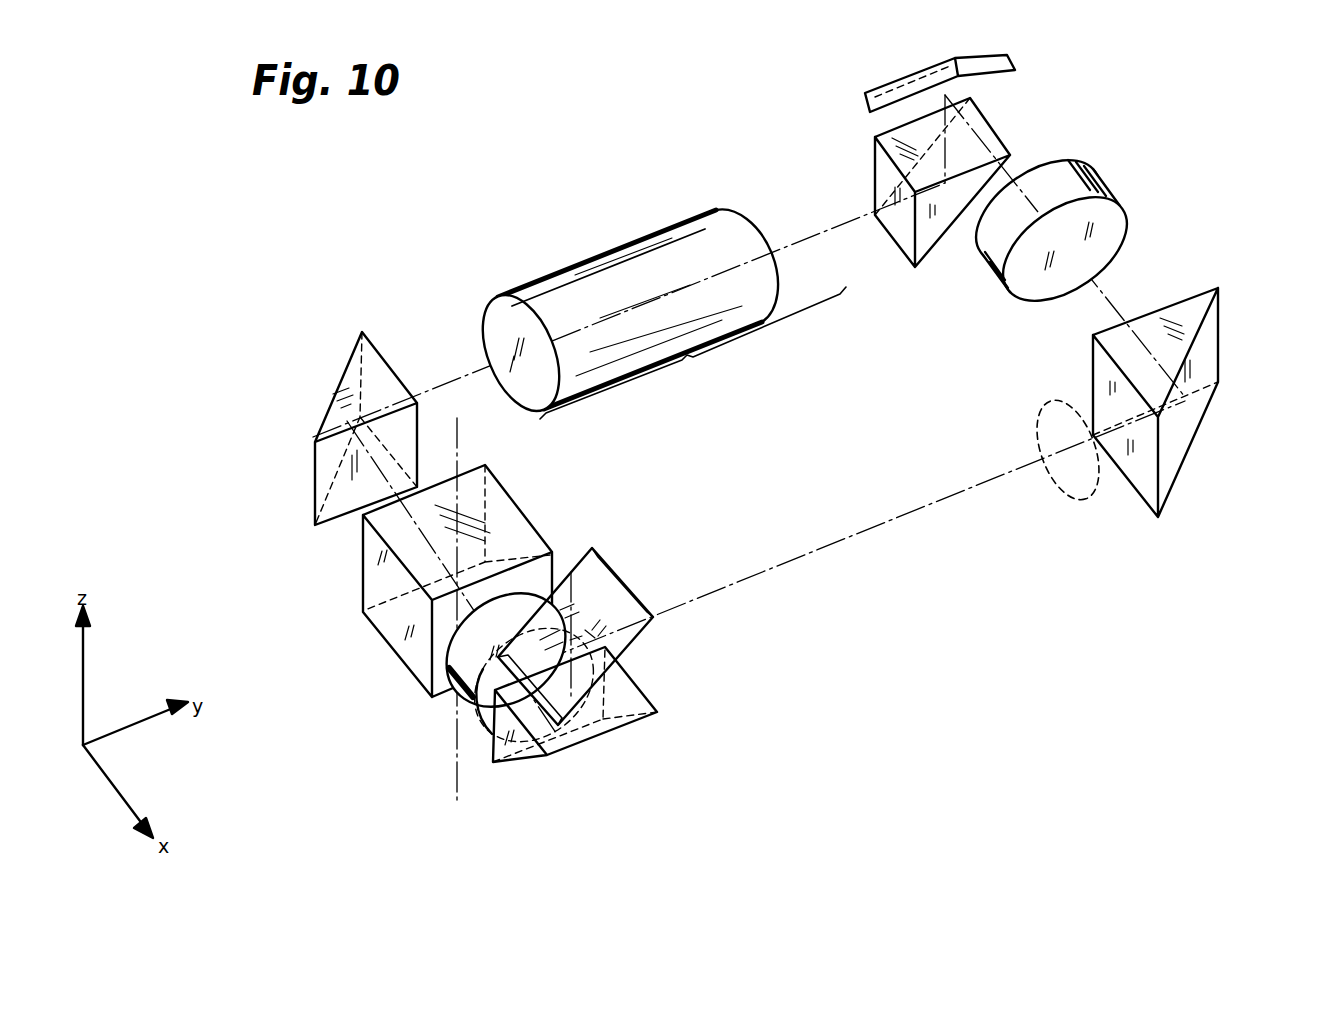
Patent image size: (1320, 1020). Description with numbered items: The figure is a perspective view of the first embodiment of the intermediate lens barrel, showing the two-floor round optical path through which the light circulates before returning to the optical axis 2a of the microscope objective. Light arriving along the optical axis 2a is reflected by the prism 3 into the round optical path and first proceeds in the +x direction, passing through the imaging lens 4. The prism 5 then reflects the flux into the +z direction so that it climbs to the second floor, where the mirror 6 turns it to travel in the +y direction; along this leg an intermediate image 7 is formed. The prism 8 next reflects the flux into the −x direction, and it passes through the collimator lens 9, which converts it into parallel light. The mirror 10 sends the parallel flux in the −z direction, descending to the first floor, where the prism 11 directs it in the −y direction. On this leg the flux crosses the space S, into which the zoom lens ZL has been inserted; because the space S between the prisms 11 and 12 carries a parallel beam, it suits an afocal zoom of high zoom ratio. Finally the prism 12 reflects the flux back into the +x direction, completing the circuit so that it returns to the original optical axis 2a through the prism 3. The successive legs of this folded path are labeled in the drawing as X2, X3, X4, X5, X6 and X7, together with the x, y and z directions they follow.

The optical axis 2a is at (452, 757).
The prism 3 is at (380, 635).
The imaging lens 4 is at (430, 688).
The prism 5 is at (640, 695).
The mirror 6 is at (633, 585).
The intermediate image 7 is at (1095, 500).
The prism 8 is at (1175, 450).
The collimator lens 9 is at (1075, 165).
The mirror 10 is at (870, 108).
The prism 11 is at (873, 175).
The prism 12 is at (343, 392).
The zoom lens ZL is at (605, 260).
The space S is at (693, 353).
The optical axis X2 is at (600, 707).
The optical axis X3 is at (914, 512).
The optical axis X4 is at (1100, 287).
The optical axis X5 is at (973, 128).
The optical axis X6 is at (473, 363).
The optical axis X7 is at (395, 527).